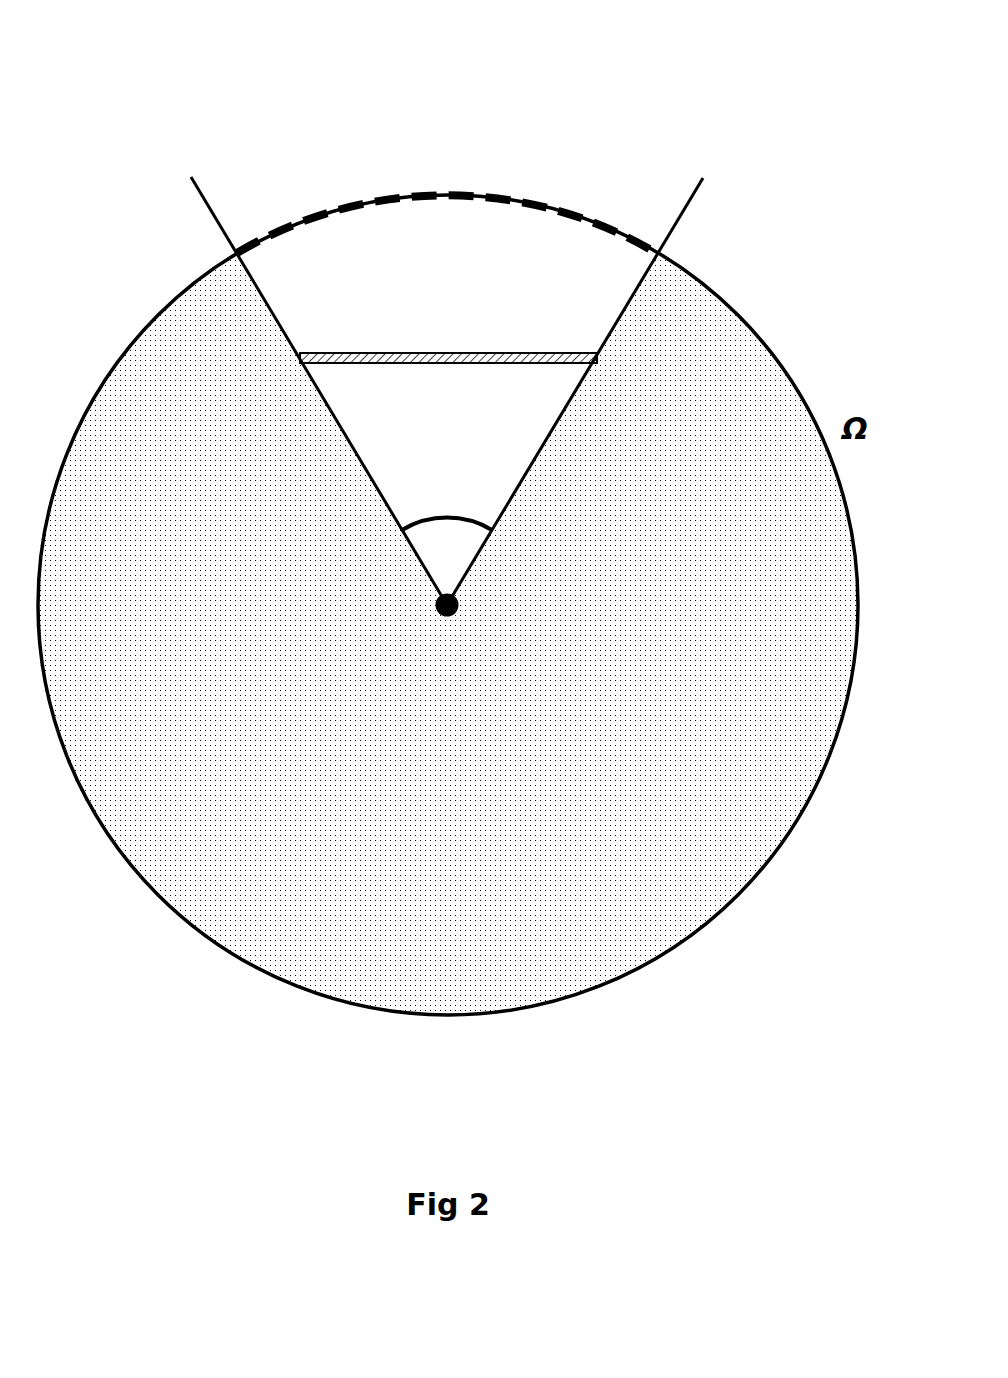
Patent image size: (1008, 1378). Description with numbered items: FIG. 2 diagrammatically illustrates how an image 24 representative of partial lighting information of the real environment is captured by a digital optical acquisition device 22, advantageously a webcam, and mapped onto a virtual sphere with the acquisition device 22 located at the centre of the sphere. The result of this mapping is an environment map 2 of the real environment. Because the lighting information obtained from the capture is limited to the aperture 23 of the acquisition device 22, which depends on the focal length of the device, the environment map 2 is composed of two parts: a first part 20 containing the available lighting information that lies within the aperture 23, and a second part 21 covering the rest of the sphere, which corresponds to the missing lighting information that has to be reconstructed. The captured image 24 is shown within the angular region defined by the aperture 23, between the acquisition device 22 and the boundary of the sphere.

The environment map 2 is at (447, 596).
The first part of the environment map 20 is at (397, 270).
The second part of the environment map 21 is at (647, 880).
The digital optical acquisition device 22 is at (440, 615).
The aperture 23 is at (443, 518).
The captured image 24 is at (440, 353).